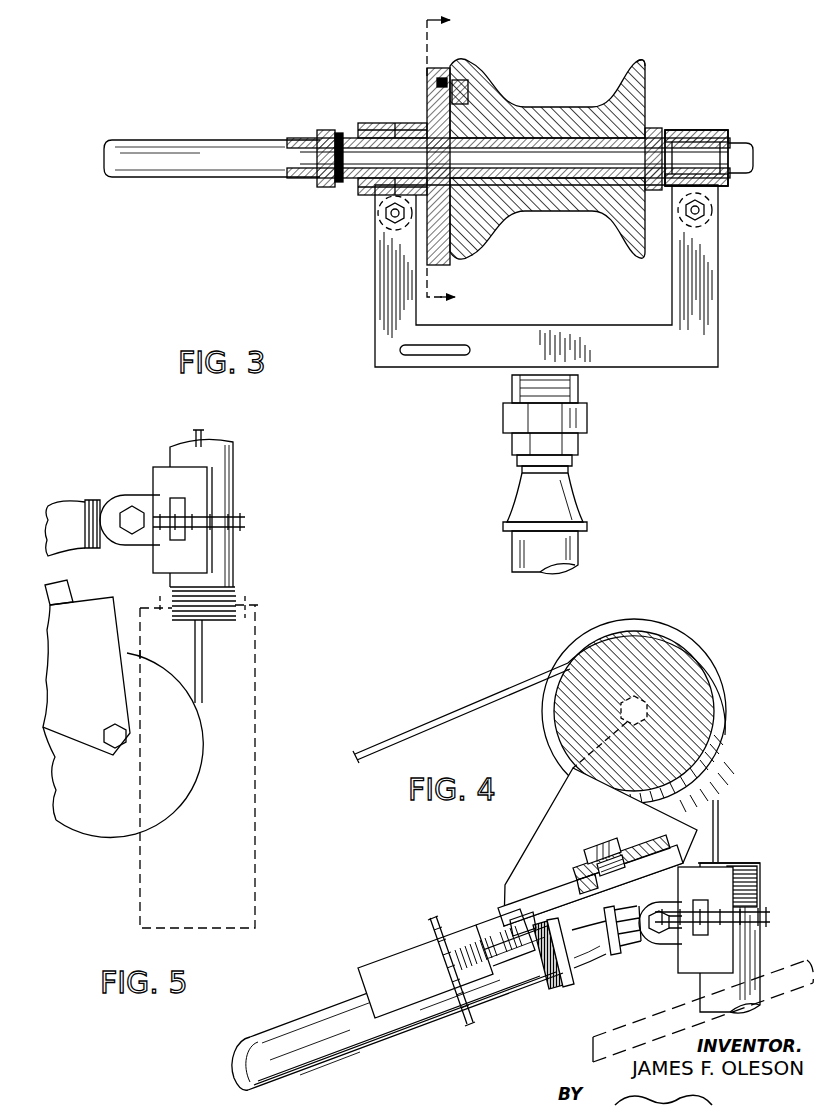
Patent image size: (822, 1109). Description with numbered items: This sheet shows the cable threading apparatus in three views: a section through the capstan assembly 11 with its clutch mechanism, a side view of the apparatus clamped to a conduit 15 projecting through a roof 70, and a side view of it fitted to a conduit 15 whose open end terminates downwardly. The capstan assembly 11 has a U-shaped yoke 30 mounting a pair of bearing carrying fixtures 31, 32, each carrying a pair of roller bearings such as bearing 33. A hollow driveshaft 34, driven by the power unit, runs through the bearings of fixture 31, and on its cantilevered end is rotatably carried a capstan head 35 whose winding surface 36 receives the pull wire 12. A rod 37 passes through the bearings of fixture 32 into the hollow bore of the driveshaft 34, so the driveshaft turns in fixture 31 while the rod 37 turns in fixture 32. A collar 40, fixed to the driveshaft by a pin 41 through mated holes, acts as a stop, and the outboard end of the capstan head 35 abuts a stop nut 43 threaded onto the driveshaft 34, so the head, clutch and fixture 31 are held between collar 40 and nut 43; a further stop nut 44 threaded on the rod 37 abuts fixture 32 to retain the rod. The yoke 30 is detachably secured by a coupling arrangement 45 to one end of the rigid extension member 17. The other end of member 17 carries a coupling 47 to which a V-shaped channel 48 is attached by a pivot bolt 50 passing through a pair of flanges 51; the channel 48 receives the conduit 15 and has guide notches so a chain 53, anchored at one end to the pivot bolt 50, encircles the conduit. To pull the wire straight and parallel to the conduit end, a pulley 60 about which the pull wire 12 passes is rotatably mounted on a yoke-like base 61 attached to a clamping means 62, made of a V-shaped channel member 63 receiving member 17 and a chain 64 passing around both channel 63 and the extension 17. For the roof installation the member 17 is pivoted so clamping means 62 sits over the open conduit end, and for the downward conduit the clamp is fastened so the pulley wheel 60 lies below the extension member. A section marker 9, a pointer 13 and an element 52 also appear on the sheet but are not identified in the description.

In FIG. 3, the section line 9- 9 is at (451, 161).
In FIG. 3, the capstan assembly 11 is at (698, 418).
In FIG. 5, the pull wire 12 is at (203, 660).
In FIG. 4, the pull wire 12 is at (490, 687).
In FIG. 3, the hub flange 13 is at (412, 80).
In FIG. 5, the conduit 15 is at (233, 474).
In FIG. 4, the conduit 15 is at (758, 946).
In FIG. 3, the rigid extension member 17 is at (575, 553).
In FIG. 4, the rigid extension member 17 is at (335, 1065).
In FIG. 3, the U-shaped yoke 30 is at (718, 258).
In FIG. 3, the bearing carrying fixture 31 is at (390, 122).
In FIG. 3, the bearing carrying fixture 32 is at (709, 128).
In FIG. 3, the roller bearing 33 is at (688, 130).
In FIG. 3, the hollow driveshaft 34 is at (205, 140).
In FIG. 3, the capstan head 35 is at (643, 70).
In FIG. 3, the winding surface 36 is at (512, 107).
In FIG. 3, the rod 37 is at (552, 158).
In FIG. 3, the collar 40 is at (324, 187).
In FIG. 3, the pin 41 is at (339, 190).
In FIG. 3, the stop nut 43 is at (649, 127).
In FIG. 3, the stop nut 44 is at (746, 143).
In FIG. 3, the coupling arrangement 45 is at (508, 435).
In FIG. 4, the coupling 47 is at (587, 983).
In FIG. 5, the V-shaped channel 48 is at (153, 480).
In FIG. 4, the V-shaped channel 48 is at (693, 976).
In FIG. 5, the pivot bolt 50 is at (131, 510).
In FIG. 4, the pivot bolt 50 is at (645, 945).
In FIG. 4, the flanges 51 is at (672, 945).
In FIG. 4, the rod 52 is at (722, 870).
In FIG. 5, the chain 53 is at (243, 520).
In FIG. 4, the chain 53 is at (766, 913).
In FIG. 5, the pulley 60 is at (107, 834).
In FIG. 4, the pulley 60 is at (690, 637).
In FIG. 4, the yoke-like base 61 is at (545, 820).
In FIG. 4, the clamping means 62 is at (443, 910).
In FIG. 4, the V-shaped channel member 63 is at (393, 957).
In FIG. 4, the chain 64 is at (467, 1025).
In FIG. 4, the roof 70 is at (593, 1045).